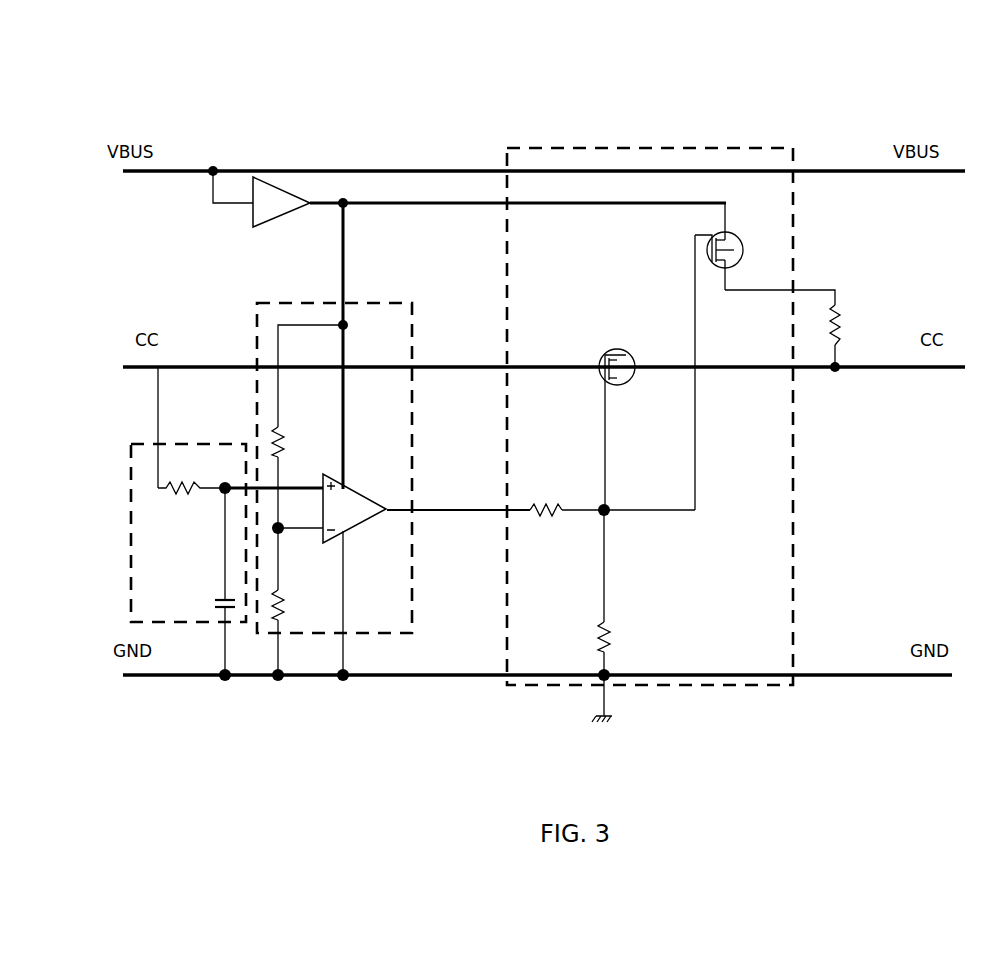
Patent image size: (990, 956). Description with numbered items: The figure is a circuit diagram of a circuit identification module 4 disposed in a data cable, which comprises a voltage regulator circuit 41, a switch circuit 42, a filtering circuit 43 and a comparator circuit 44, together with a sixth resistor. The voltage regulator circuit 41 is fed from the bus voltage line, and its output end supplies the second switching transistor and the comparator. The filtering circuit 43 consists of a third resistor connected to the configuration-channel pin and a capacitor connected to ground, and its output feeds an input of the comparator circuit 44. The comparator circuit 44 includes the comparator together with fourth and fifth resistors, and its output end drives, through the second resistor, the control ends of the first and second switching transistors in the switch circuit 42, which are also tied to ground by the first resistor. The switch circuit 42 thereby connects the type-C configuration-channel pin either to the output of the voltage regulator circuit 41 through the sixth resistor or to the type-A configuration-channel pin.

The circuit identification module 4 is at (512, 60).
The voltage regulator circuit 41 is at (277, 190).
The switch circuit 42 is at (707, 148).
The filtering circuit 43 is at (176, 622).
The comparator circuit 44 is at (380, 636).